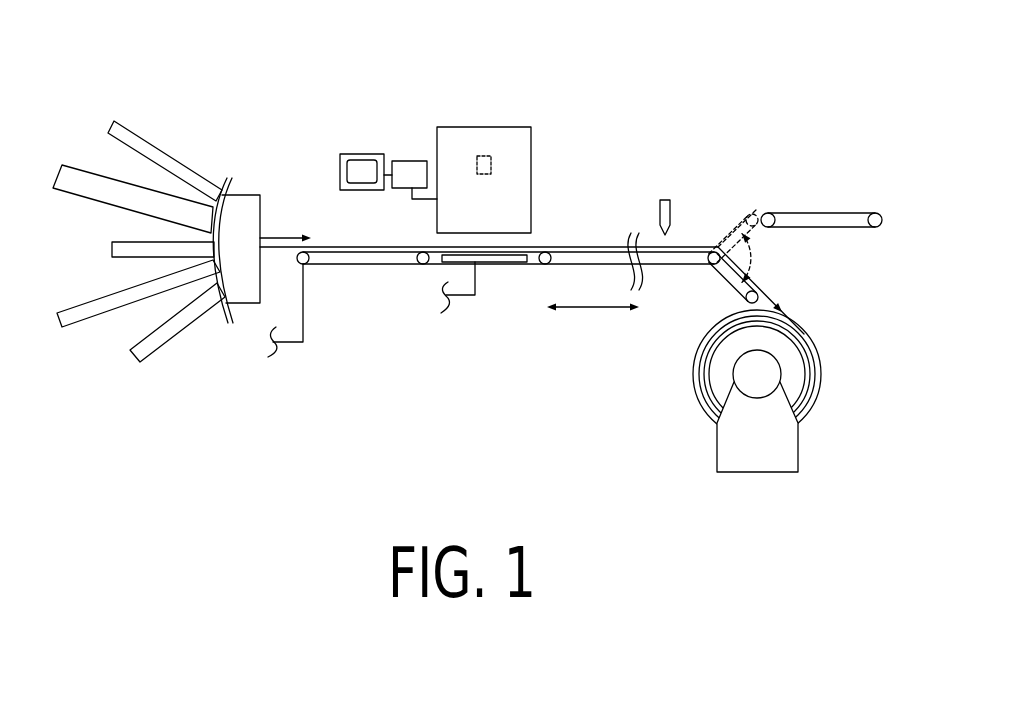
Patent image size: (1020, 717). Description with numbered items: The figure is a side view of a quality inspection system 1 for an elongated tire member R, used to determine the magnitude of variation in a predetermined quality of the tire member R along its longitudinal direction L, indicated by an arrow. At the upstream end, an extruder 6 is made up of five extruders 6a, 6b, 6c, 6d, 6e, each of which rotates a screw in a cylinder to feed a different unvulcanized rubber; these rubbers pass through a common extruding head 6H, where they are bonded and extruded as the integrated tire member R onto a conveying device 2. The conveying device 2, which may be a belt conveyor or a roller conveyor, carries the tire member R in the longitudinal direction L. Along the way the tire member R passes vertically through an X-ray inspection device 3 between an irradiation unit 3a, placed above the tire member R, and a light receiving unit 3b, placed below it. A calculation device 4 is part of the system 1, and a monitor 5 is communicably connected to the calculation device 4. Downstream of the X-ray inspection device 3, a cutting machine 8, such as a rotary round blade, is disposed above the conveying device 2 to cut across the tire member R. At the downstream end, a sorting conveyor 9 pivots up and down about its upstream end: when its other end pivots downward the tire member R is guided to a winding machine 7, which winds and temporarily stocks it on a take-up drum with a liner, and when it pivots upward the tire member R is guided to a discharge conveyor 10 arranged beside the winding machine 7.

The quality inspection system 1 is at (427, 106).
The conveying device 2 is at (395, 268).
The X-ray inspection device 3 is at (535, 146).
The irradiation unit 3a is at (487, 155).
The light receiving unit 3b is at (503, 263).
The calculation device 4 is at (405, 163).
The monitor 5 is at (352, 163).
The extruder 6 is at (198, 130).
The extruder 6a is at (112, 246).
The extruder 6b is at (163, 343).
The extruder 6c is at (102, 317).
The extruder 6d is at (93, 177).
The extruder 6e is at (152, 153).
The extruding head 6H is at (243, 196).
The winding machine 7 is at (786, 347).
The cutting machine 8 is at (675, 200).
The sorting conveyor 9 is at (724, 273).
The discharge conveyor 10 is at (817, 216).
The tire member R is at (329, 240).
The longitudinal direction L is at (593, 292).